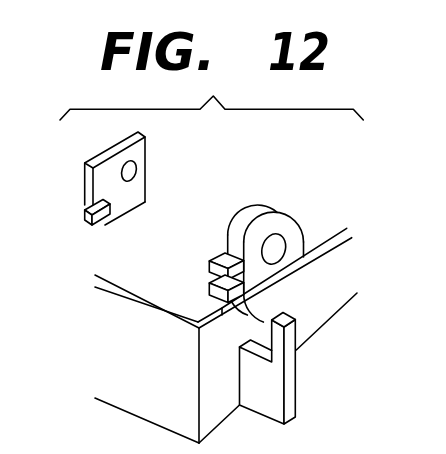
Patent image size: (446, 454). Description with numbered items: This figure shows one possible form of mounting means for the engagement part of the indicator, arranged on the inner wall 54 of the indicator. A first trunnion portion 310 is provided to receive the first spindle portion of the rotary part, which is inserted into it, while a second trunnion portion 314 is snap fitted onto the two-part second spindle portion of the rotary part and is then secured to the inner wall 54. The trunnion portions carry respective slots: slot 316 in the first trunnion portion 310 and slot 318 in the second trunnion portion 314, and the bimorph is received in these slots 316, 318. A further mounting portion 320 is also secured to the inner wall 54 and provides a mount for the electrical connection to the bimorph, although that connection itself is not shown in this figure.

The inner wall 54 is at (315, 302).
The first trunnion portion 310 is at (140, 186).
The second trunnion portion 314 is at (289, 230).
The slot 316 is at (107, 217).
The slot 318 is at (210, 281).
The further mounting portion 320 is at (272, 383).